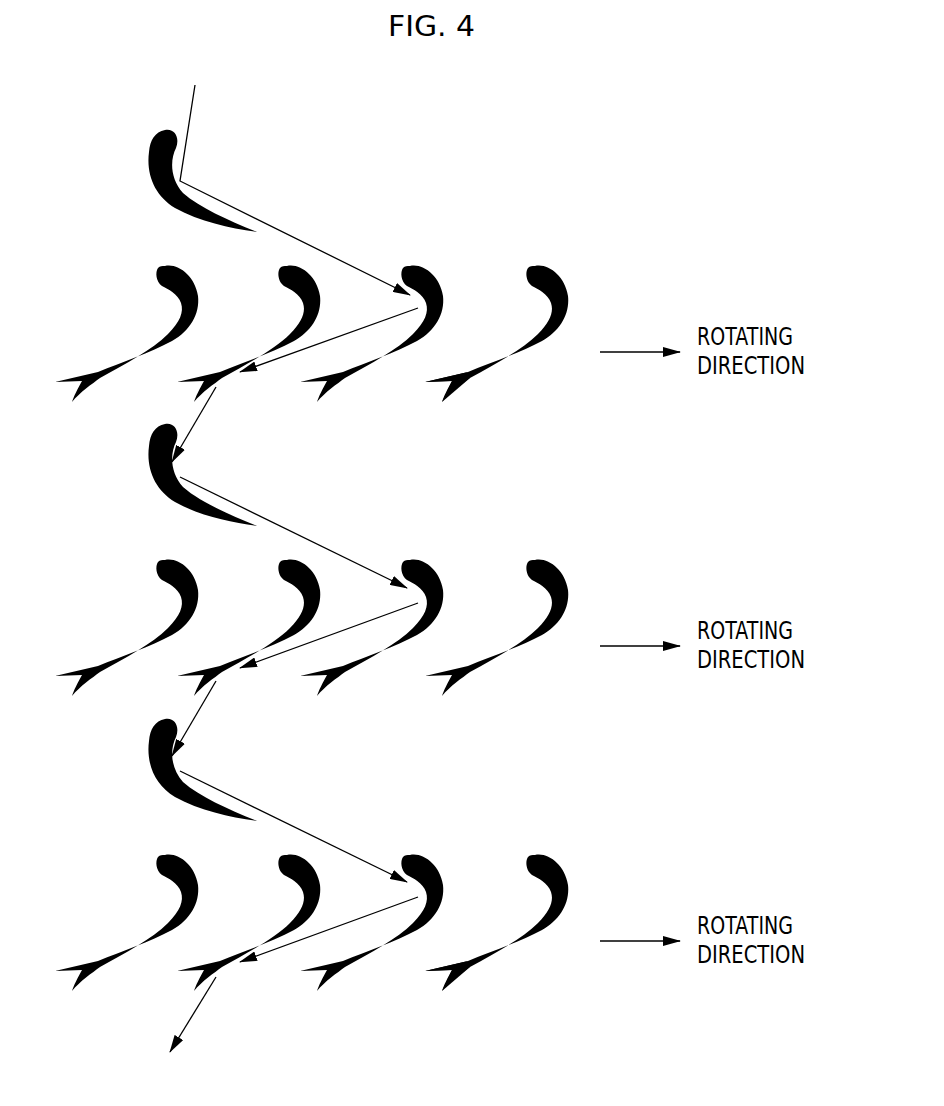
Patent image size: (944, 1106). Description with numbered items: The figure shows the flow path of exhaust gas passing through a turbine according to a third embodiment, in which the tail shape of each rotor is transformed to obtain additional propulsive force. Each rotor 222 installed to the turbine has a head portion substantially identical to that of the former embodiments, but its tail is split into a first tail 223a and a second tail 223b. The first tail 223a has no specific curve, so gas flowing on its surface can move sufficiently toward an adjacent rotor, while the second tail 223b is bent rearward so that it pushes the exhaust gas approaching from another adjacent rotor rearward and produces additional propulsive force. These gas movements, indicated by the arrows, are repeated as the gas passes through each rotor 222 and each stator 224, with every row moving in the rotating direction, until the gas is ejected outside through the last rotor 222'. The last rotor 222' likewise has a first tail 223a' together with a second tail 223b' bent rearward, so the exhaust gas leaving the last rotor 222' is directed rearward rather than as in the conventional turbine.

The rotor 222 is at (509, 326).
The first tail 223a is at (425, 401).
The second tail 223b is at (470, 404).
The stator 224 is at (148, 177).
The last rotor 222' is at (507, 917).
The first tail of last rotor 223a' is at (420, 989).
The second tail of last rotor 223b' is at (476, 995).